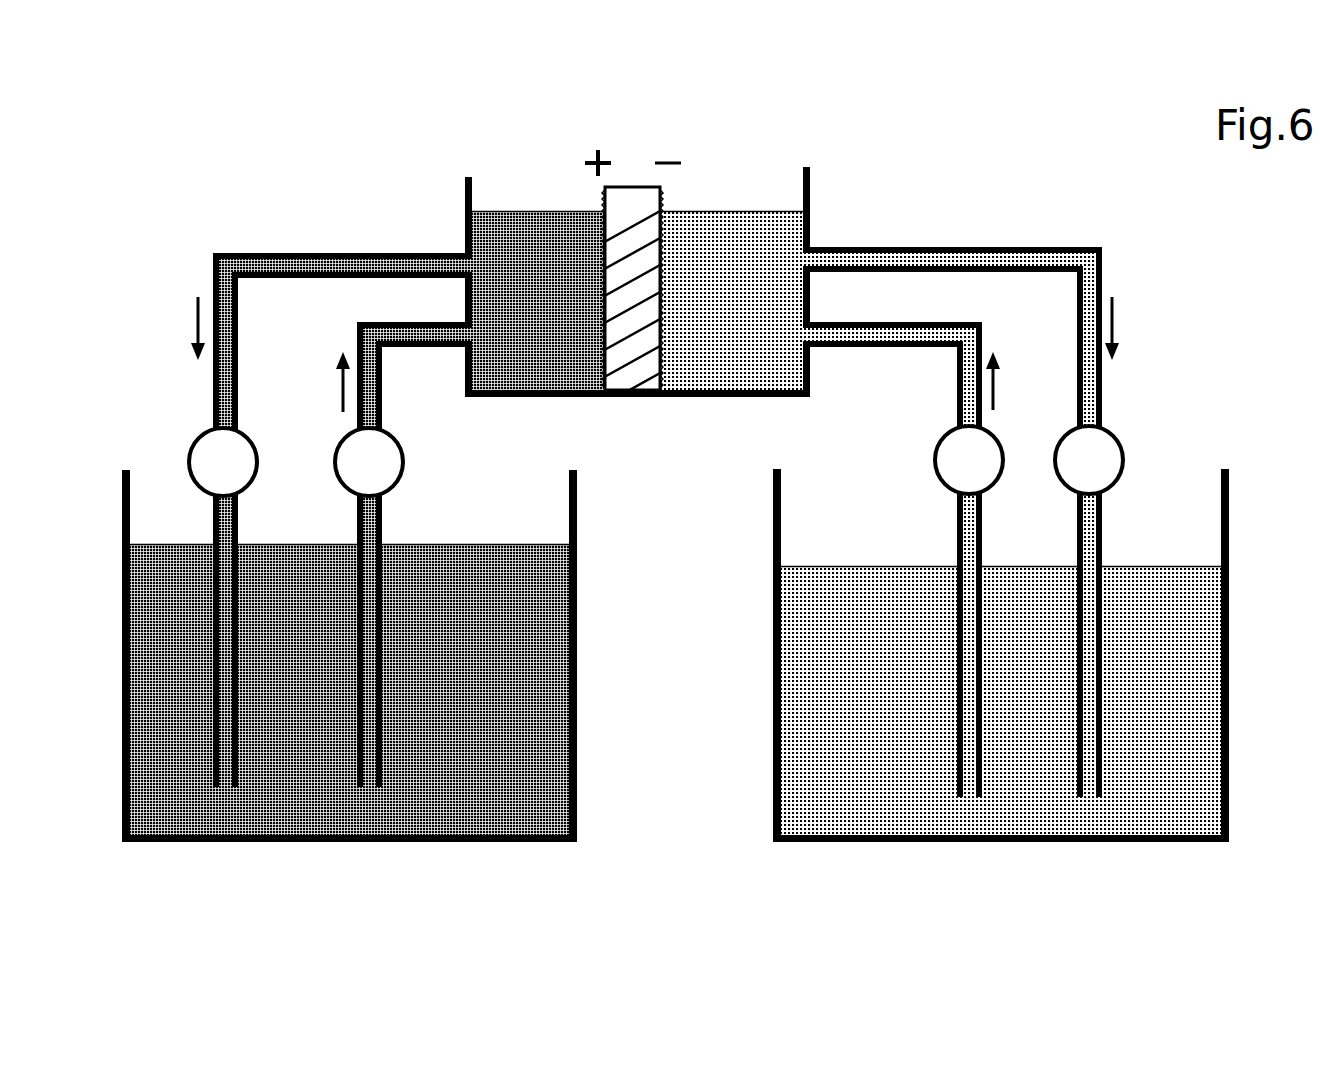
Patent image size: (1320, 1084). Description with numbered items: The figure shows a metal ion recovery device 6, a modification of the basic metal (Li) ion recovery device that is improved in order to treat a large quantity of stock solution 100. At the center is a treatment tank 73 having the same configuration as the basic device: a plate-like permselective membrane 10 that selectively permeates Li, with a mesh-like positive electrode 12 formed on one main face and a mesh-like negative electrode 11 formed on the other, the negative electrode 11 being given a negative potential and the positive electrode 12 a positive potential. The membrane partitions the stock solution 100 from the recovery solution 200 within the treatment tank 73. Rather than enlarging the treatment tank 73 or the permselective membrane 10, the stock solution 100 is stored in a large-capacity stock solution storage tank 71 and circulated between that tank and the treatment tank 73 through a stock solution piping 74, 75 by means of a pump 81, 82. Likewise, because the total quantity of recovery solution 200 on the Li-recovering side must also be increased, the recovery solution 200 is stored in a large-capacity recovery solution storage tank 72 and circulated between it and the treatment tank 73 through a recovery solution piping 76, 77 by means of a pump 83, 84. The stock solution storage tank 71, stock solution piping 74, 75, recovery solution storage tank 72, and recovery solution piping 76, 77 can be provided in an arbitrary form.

The metal ion recovery device 6 is at (653, 894).
The permselective membrane 10 is at (625, 210).
The negative electrode 11 is at (663, 205).
The positive electrode 12 is at (605, 205).
The stock solution storage tank 71 is at (1159, 842).
The recovery solution storage tank 72 is at (307, 842).
The treatment tank 73 is at (715, 397).
The stock solution piping 74 is at (950, 247).
The stock solution piping 75 is at (900, 347).
The recovery solution piping 76 is at (297, 253).
The recovery solution piping 77 is at (380, 380).
The pump 81 is at (1107, 453).
The pump 82 is at (950, 463).
The pump 83 is at (207, 452).
The pump 84 is at (383, 462).
The stock solution 100 is at (760, 212).
The recovery solution 200 is at (510, 212).